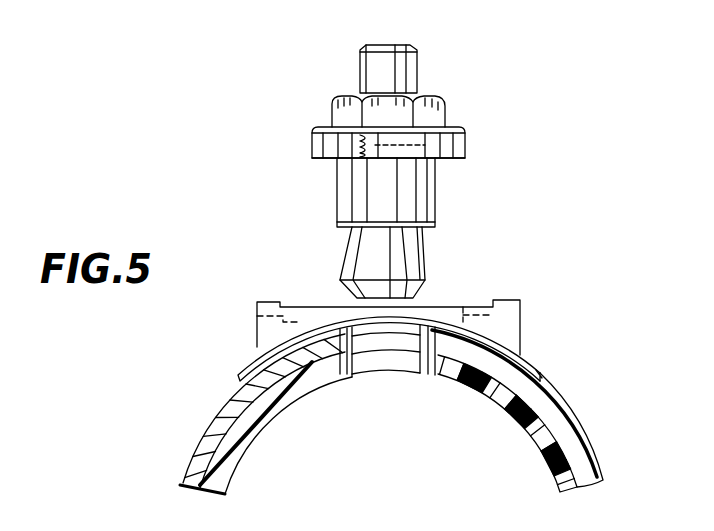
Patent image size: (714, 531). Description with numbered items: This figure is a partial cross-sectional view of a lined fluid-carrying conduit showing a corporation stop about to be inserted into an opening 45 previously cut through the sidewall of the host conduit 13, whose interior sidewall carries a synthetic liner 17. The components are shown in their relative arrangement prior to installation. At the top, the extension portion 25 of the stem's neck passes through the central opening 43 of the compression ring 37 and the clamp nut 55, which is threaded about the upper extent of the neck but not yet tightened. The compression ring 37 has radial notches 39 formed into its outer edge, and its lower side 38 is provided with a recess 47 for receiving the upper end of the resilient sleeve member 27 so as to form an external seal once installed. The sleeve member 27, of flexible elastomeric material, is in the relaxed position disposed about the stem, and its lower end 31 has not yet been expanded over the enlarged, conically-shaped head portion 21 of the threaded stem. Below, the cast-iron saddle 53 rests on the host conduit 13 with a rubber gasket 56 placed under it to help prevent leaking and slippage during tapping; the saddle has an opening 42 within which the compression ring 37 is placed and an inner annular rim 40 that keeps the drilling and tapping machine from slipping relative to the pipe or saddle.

The host conduit 13 is at (580, 430).
The synthetic liner 17 is at (543, 437).
The conically-shaped head portion 21 is at (342, 270).
The extension portion 25 is at (388, 73).
The resilient sleeve member 27 is at (347, 210).
The lower end of sleeve member 31 is at (338, 228).
The compression ring 37 is at (316, 132).
The lower side of compression member 38 is at (452, 160).
The radial notches 39 is at (357, 137).
The inner annular rim 40 is at (257, 316).
The opening of saddle 42 is at (323, 322).
The central opening 43 is at (464, 129).
The opening in conduit sidewall 45 is at (410, 353).
The recess 47 is at (342, 168).
The saddle 53 is at (537, 363).
The clamp nut 55 is at (433, 98).
The rubber gasket 56 is at (540, 377).